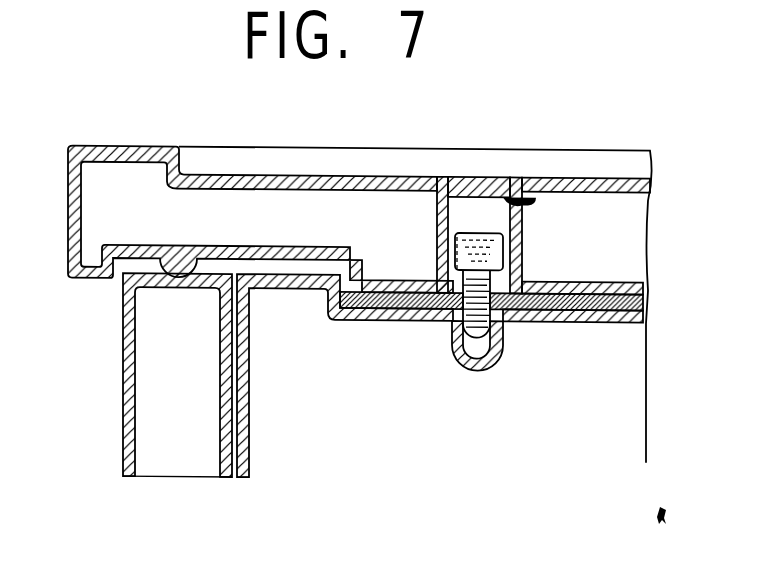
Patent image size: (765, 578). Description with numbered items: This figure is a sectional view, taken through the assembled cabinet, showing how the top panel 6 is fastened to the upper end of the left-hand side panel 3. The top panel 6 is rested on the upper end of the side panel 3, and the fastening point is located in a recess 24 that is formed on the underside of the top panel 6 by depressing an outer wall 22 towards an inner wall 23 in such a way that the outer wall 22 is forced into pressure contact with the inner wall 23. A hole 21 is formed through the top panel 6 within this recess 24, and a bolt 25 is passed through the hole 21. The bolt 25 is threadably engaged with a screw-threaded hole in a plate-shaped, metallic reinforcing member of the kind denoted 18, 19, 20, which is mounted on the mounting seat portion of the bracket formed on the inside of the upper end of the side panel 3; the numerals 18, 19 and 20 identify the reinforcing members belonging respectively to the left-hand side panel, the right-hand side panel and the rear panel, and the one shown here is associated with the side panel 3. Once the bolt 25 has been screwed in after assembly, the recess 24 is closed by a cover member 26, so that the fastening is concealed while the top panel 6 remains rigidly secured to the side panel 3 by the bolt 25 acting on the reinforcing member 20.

The left-hand side panel 3 is at (121, 429).
The top panel 6 is at (342, 197).
The reinforcing member 18 is at (573, 315).
The reinforcing member 19 is at (345, 376).
The reinforcing member 20 is at (396, 318).
The hole 21 is at (508, 320).
The outer wall 22 is at (572, 176).
The inner wall 23 is at (588, 279).
The recess 24 is at (483, 181).
The bolt 25 is at (437, 229).
The cover member 26 is at (510, 181).